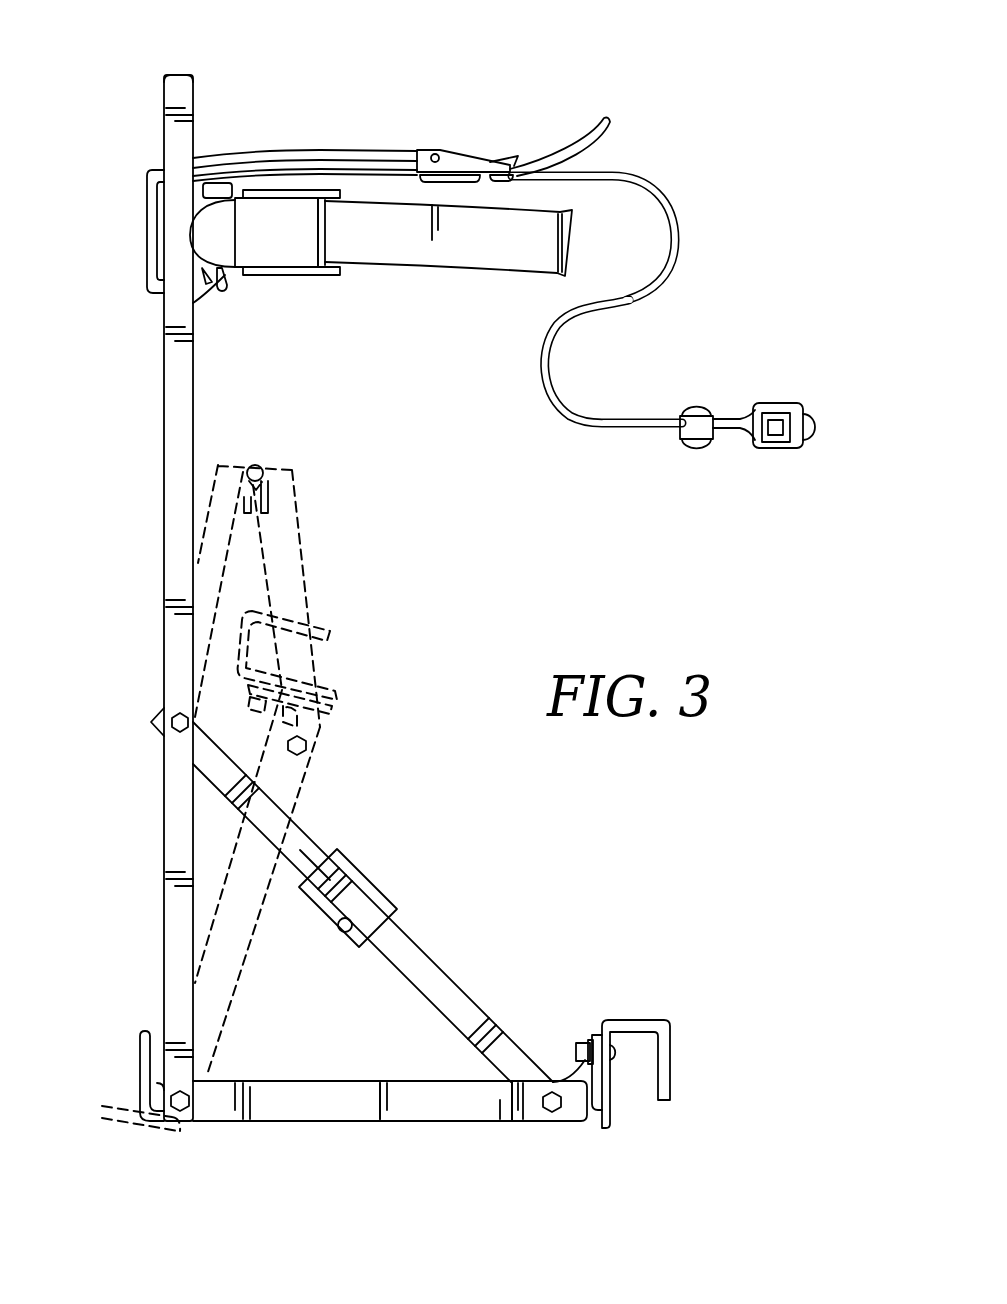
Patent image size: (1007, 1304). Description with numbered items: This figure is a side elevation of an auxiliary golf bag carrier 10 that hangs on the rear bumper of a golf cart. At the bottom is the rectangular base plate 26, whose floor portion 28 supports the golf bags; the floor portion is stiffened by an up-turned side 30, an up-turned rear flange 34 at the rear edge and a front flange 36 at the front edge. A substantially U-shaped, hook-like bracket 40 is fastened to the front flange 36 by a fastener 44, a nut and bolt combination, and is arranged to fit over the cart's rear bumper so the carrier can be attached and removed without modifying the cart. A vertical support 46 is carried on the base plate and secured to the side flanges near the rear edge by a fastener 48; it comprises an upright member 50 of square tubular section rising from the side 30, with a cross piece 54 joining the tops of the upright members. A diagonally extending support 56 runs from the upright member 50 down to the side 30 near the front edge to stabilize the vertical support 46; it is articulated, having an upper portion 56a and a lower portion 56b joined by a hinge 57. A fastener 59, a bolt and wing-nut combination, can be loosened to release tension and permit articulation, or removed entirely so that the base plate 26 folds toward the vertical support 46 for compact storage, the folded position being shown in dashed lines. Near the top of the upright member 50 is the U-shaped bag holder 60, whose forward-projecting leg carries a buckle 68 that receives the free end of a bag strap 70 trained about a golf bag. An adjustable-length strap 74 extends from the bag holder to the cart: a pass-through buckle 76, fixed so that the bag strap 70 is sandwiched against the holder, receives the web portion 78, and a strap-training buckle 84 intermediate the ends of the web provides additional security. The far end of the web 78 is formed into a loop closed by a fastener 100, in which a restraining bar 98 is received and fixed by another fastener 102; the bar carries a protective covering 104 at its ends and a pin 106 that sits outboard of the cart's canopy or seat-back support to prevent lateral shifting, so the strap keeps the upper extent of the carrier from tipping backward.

The auxiliary golf bag carrier 10 is at (95, 420).
The base plate 26 is at (412, 1126).
The floor portion 28 is at (460, 1125).
The up-turned side 30 is at (258, 893).
The rear flange 34 is at (140, 1050).
The front flange 36 is at (562, 1075).
The bracket 40 is at (628, 1020).
The fastener 44 is at (575, 1042).
The vertical support 46 is at (163, 512).
The fastener 48 is at (183, 1100).
The upright member 50 is at (185, 452).
The cross piece 54 is at (178, 73).
The diagonally extending support 56 is at (312, 545).
The upper portion 56a is at (328, 858).
The lower portion 56b is at (417, 907).
The hinge 57 is at (345, 932).
The fastener 59 is at (183, 728).
The bag holder 60 is at (300, 283).
The buckle 68 is at (322, 280).
The bag strap 70 is at (482, 243).
The adjustable-length strap 74 is at (690, 208).
The pass-through buckle 76 is at (228, 300).
The web portion 78 is at (664, 299).
The strap-training buckle 84 is at (471, 148).
The restraining bar 98 is at (768, 405).
The fastener 100 is at (705, 448).
The fastener 102 is at (810, 420).
The covering 104 is at (803, 448).
The pin 106 is at (718, 432).